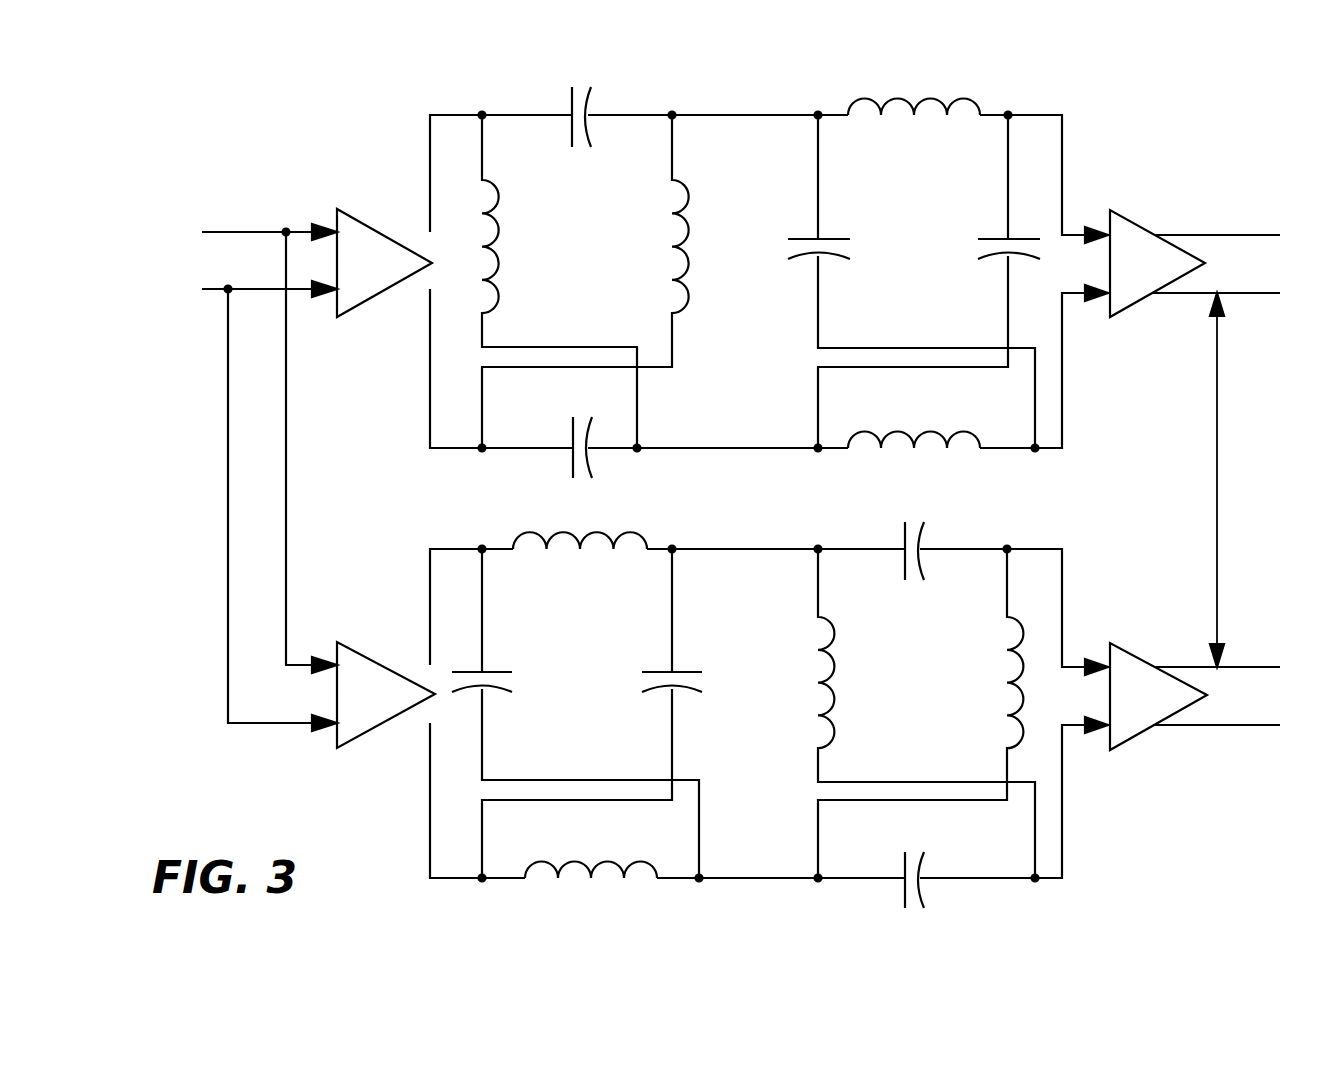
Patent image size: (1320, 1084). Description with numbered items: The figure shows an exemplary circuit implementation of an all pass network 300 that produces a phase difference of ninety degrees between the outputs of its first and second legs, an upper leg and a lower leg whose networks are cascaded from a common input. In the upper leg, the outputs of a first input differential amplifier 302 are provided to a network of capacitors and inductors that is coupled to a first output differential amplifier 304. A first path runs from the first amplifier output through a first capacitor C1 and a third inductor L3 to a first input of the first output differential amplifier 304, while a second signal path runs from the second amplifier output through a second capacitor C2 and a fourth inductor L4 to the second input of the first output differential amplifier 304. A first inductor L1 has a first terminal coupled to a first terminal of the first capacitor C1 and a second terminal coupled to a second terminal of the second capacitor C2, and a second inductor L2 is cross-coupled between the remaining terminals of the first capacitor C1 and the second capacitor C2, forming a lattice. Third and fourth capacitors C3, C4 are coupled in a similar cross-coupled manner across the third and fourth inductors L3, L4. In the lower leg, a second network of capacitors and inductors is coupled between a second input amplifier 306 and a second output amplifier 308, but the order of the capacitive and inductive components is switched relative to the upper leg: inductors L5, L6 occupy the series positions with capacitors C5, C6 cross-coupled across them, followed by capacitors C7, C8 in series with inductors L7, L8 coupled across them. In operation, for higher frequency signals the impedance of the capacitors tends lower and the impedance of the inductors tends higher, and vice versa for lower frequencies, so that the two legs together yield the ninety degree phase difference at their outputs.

The all pass network 300 is at (300, 140).
The first input differential amplifier 302 is at (384, 263).
The first output differential amplifier 304 is at (1157, 263).
The second input amplifier 306 is at (386, 695).
The second output amplifier 308 is at (1158, 696).
The first capacitor C1 is at (581, 135).
The second capacitor C2 is at (579, 431).
The third capacitor C3 is at (911, 281).
The fourth capacitor C4 is at (929, 281).
The capacitor C5 is at (575, 713).
The capacitor C6 is at (600, 713).
The capacitor C7 is at (913, 567).
The capacitor C8 is at (916, 863).
The first inductor L1 is at (559, 281).
The second inductor L2 is at (585, 281).
The third inductor L3 is at (914, 128).
The fourth inductor L4 is at (914, 425).
The inductor L5 is at (580, 561).
The inductor L6 is at (591, 855).
The inductor L7 is at (920, 713).
The inductor L8 is at (926, 713).